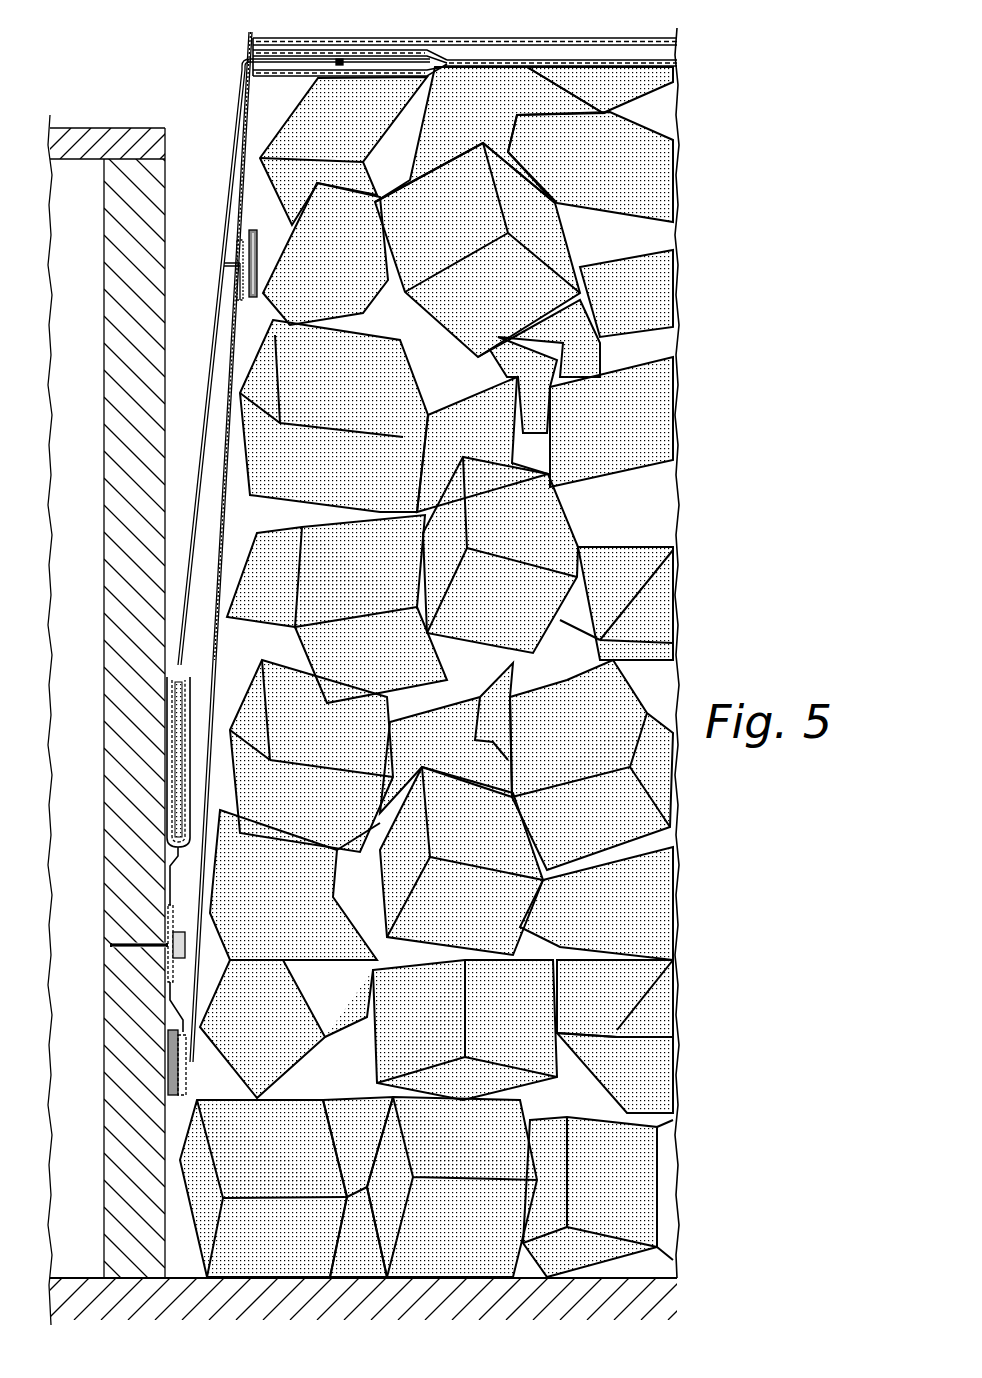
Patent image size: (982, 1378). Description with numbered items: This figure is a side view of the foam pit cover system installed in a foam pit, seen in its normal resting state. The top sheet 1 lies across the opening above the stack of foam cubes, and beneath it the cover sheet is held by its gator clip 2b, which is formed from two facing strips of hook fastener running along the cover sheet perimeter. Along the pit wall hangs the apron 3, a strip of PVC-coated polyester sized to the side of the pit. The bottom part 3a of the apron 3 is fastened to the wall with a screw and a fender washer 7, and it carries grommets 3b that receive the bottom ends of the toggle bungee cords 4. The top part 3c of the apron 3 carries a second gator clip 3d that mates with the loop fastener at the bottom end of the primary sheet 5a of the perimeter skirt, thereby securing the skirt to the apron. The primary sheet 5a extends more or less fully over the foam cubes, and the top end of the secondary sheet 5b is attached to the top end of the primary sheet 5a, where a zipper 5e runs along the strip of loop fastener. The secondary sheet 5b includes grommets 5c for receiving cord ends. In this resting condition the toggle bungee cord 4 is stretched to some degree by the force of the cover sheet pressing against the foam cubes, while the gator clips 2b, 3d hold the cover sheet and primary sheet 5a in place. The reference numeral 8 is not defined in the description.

The top sheet 1 is at (677, 30).
The gator clip 2b is at (406, 38).
The apron 3 is at (600, 60).
The bottom part of apron 3a is at (223, 1100).
The grommets 3b is at (188, 1070).
The top part of apron 3c is at (193, 792).
The gator clip 3d is at (246, 791).
The toggle bungee cords 4 is at (203, 862).
The primary sheet of perimeter skirt 5a is at (231, 207).
The secondary sheet of perimeter skirt 5b is at (247, 195).
The grommets 5c is at (237, 250).
The zipper 5e is at (339, 58).
The fender washer 7 is at (186, 945).
The mounting plate 8 is at (180, 972).